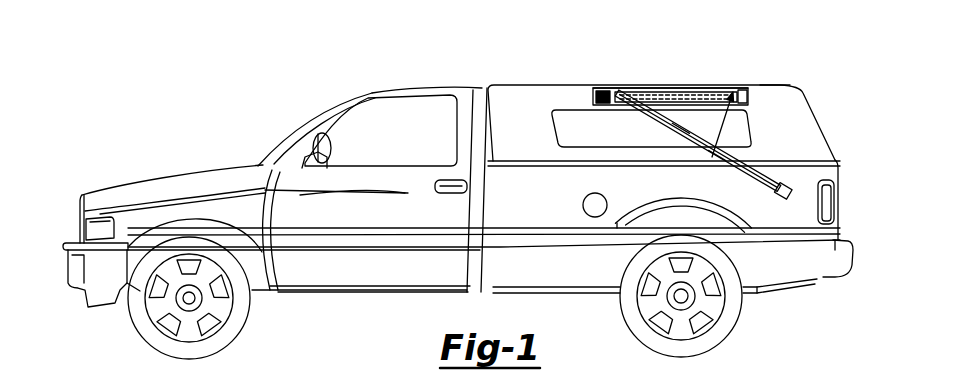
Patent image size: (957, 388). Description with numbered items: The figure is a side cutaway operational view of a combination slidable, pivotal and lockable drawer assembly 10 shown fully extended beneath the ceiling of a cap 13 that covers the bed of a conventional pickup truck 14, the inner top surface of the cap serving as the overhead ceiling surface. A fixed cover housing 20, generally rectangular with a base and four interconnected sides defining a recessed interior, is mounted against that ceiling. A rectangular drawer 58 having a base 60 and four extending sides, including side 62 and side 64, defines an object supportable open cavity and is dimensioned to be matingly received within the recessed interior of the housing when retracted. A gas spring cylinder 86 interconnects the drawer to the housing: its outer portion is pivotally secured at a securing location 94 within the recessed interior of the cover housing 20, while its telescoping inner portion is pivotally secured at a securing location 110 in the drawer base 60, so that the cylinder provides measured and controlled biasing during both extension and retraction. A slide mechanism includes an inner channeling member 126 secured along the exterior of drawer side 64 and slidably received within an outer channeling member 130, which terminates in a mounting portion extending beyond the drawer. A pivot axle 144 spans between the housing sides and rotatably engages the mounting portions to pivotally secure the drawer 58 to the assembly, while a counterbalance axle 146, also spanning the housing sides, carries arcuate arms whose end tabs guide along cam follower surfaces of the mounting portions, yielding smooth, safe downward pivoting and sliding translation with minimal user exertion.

The drawer assembly 10 is at (723, 69).
The cap 13 is at (525, 116).
The pickup truck 14 is at (270, 119).
The fixed cover housing 20 is at (641, 80).
The drawer 58 is at (800, 178).
The base 60 is at (733, 178).
The side 62 is at (793, 200).
The side 64 is at (786, 184).
The gas spring cylinder 86 is at (737, 123).
The securing location 94 is at (735, 80).
The securing location 110 is at (683, 133).
The inner channeling member 126 is at (737, 173).
The outer channeling member 130 is at (650, 138).
The pivot axle 144 is at (612, 90).
The counterbalance axle 146 is at (600, 90).